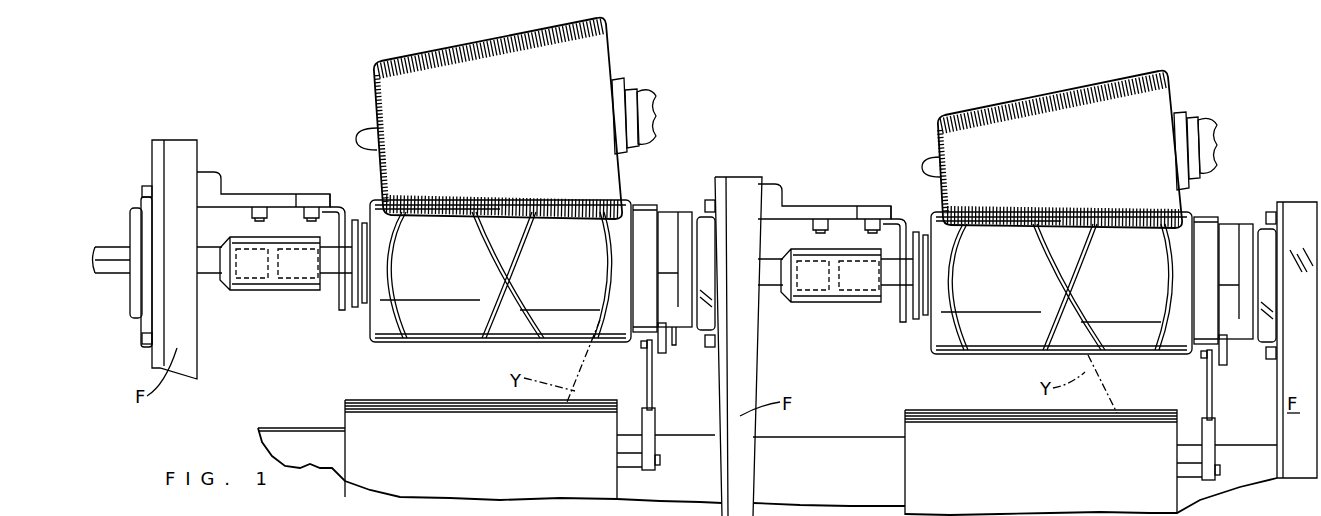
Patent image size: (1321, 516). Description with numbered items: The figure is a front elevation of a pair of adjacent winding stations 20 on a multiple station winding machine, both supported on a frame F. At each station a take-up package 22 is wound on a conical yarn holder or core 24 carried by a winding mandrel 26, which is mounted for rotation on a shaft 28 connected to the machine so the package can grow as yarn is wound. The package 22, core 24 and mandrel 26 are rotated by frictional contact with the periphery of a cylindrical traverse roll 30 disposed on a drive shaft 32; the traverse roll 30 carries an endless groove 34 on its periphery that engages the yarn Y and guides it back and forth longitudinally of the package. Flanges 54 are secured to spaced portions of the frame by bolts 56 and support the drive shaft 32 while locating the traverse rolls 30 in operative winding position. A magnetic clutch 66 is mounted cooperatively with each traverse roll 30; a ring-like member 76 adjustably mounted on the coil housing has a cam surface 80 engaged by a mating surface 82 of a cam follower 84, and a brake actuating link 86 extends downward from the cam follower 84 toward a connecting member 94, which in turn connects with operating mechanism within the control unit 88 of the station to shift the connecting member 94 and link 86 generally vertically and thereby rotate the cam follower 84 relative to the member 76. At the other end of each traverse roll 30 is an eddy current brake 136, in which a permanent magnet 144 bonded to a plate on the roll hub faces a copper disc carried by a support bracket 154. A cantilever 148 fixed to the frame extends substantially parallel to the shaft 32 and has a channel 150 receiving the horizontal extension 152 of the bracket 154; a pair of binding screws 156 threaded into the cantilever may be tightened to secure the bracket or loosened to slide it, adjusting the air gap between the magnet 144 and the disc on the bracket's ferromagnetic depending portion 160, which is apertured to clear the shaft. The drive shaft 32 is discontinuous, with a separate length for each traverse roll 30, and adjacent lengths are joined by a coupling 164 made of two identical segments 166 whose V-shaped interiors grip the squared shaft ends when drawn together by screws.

The winding station 20 is at (344, 103).
The take-up package 22 is at (553, 106).
The conical yarn holder or core 24 is at (618, 85).
The winding mandrel 26 is at (633, 116).
The shaft 28 is at (652, 132).
The cylindrical traverse roll 30 is at (452, 277).
The drive shaft 32 is at (205, 262).
The endless groove 34 is at (512, 243).
The flange 54 is at (158, 163).
The bolt 56 is at (142, 338).
The magnetic clutch 66 is at (690, 195).
The ring-like member 76 is at (683, 222).
The cam surface 80 is at (668, 222).
The mating surface 82 is at (674, 296).
The cam follower 84 is at (665, 301).
The brake actuating link 86 is at (645, 380).
The control unit 88 is at (507, 458).
The connecting member 94 is at (650, 441).
The eddy current brake 136 is at (343, 316).
The permanent magnet 144 is at (363, 309).
The cantilever 148 is at (215, 193).
The channel 150 is at (307, 207).
The horizontal extension 152 is at (340, 204).
The support bracket 154 is at (360, 200).
The binding screws 156 is at (312, 213).
The depending portion 160 is at (346, 296).
The coupling 164 is at (265, 298).
The segment 166 is at (280, 288).